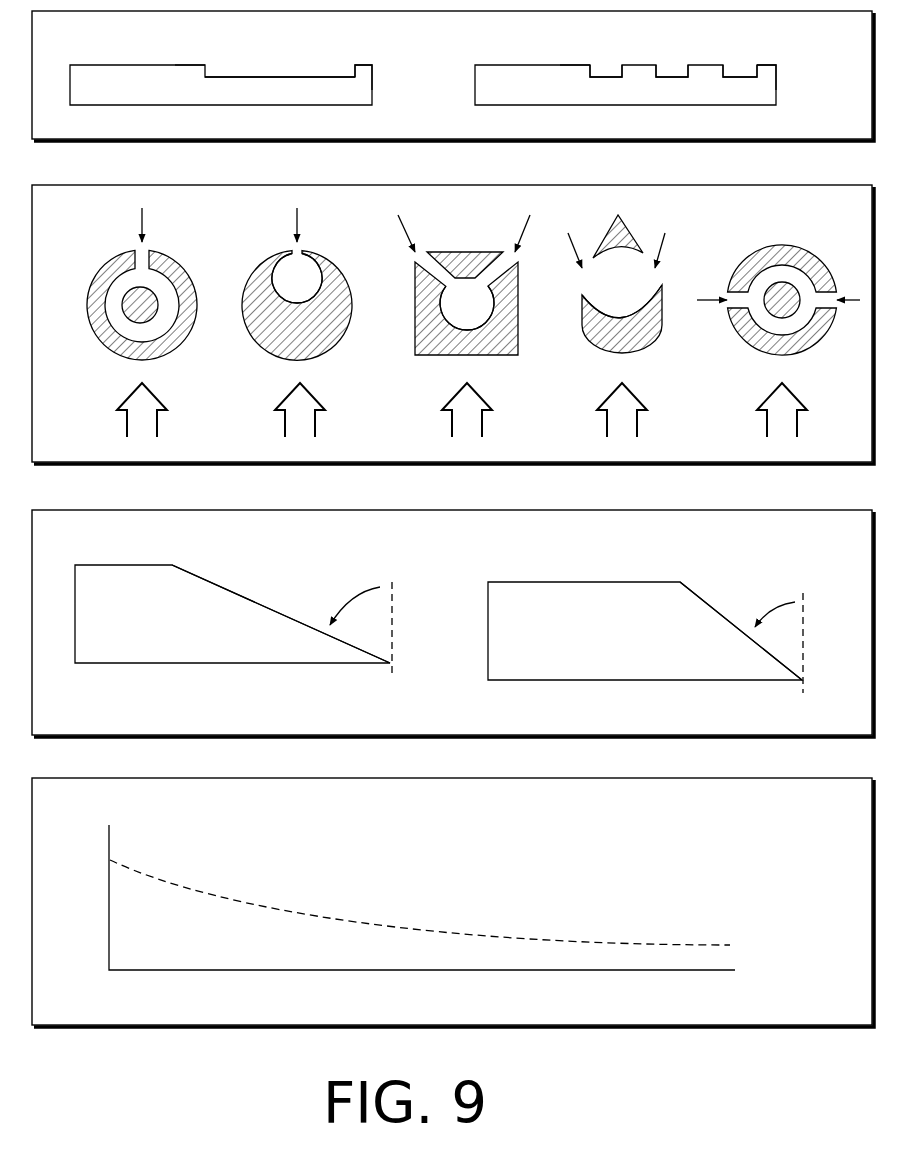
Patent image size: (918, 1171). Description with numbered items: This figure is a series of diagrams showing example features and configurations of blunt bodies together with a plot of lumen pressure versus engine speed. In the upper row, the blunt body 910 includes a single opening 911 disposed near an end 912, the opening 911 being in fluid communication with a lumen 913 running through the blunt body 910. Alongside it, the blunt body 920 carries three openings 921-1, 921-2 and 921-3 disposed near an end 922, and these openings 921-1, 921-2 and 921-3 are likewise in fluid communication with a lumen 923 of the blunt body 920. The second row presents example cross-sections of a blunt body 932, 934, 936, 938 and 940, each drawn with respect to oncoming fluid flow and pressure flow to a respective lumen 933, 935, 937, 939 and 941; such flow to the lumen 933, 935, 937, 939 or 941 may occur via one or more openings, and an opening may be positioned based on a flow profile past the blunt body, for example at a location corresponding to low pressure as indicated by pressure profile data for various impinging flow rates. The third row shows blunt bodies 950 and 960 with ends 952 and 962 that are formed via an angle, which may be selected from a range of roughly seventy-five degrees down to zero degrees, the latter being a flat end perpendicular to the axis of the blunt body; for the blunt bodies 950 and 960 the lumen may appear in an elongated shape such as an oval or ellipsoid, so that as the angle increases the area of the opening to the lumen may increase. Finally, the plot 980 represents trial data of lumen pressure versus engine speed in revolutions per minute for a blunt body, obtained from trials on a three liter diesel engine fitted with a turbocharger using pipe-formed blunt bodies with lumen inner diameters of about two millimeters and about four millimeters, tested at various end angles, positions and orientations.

The blunt body 910 is at (141, 91).
The opening 911 is at (278, 75).
The end 912 is at (373, 80).
The lumen 913 is at (185, 82).
The blunt body 920 is at (545, 91).
The opening 921-1 is at (603, 77).
The opening 921-2 is at (672, 78).
The opening 921-3 is at (750, 78).
The end 922 is at (778, 82).
The lumen 923 is at (573, 82).
The blunt body cross-section 932 is at (85, 354).
The lumen 933 is at (120, 290).
The blunt body cross-section 934 is at (243, 354).
The lumen 935 is at (297, 278).
The blunt body cross-section 936 is at (398, 354).
The lumen 937 is at (455, 303).
The blunt body cross-section 938 is at (571, 354).
The lumen 939 is at (617, 295).
The blunt body cross-section 940 is at (725, 354).
The lumen 941 is at (762, 283).
The blunt body 950 is at (141, 632).
The end 952 is at (390, 665).
The blunt body 960 is at (551, 634).
The end 962 is at (802, 682).
The plot 980 is at (783, 821).